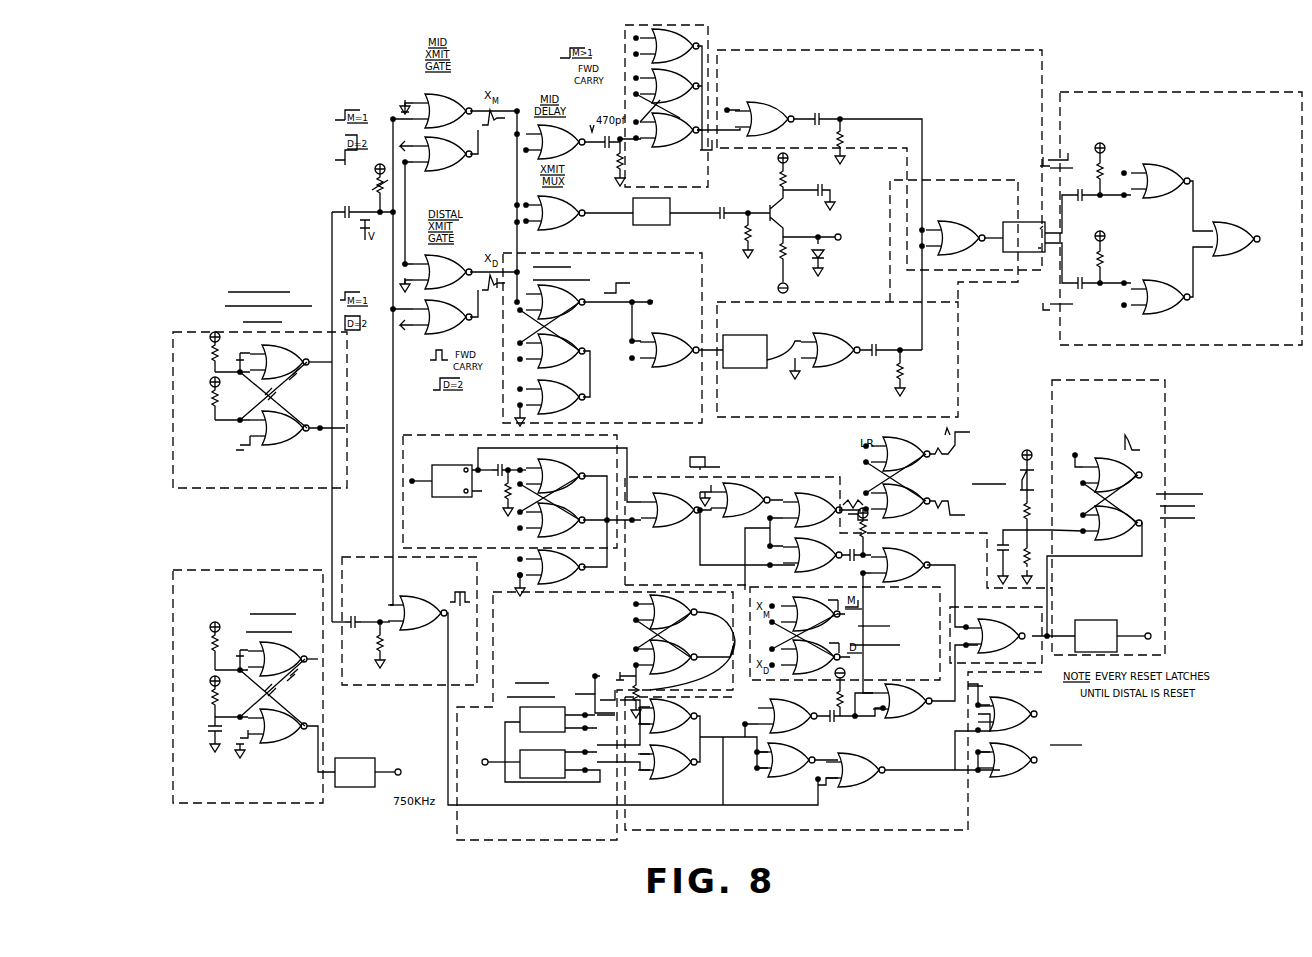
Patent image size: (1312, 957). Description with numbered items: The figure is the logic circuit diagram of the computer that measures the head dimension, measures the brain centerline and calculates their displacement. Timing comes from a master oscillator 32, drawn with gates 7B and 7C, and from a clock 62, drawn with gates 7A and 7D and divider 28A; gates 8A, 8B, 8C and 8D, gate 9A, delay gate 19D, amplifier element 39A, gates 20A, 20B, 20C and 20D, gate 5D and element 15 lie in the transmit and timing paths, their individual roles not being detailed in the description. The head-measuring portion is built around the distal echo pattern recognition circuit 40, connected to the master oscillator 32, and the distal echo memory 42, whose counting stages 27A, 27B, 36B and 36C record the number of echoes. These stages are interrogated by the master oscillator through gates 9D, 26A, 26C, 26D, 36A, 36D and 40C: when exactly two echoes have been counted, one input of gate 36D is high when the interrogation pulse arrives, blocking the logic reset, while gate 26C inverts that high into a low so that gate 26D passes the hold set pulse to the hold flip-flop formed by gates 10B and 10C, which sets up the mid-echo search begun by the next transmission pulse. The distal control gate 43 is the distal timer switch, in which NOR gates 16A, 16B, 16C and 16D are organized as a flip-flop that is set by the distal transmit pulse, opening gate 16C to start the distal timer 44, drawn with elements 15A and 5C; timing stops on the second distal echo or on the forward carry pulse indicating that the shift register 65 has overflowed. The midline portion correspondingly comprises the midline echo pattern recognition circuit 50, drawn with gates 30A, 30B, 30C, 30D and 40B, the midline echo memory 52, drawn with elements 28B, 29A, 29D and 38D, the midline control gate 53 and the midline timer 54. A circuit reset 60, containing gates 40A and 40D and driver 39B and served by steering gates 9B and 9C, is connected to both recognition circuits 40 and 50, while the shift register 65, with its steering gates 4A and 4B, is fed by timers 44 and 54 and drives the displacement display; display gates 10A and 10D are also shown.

The master oscillator 32 is at (213, 485).
The clock 62 is at (212, 796).
The distal echo pattern recognition circuit 40 is at (380, 588).
The distal echo memory 42 is at (496, 834).
The midline echo memory 52 is at (440, 549).
The midline echo pattern recognition circuit 50 is at (666, 578).
The midline control gate 53 is at (678, 184).
The midline timer 54 is at (1008, 83).
The distal control gate 43 is at (687, 420).
The distal timer 44 is at (940, 411).
The circuit reset 60 is at (1152, 411).
The shift register 65 is at (1283, 331).
The clock NOR gate 7A is at (277, 659).
The oscillator NOR gate 7B is at (279, 362).
The oscillator NOR gate 7C is at (279, 428).
The clock NOR gate 7D is at (277, 726).
The mid xmit gate 8A is at (442, 154).
The mid xmit gate 8B is at (442, 111).
The distal xmit gate 8C is at (442, 317).
The distal xmit gate 8D is at (442, 272).
The xmit mux gate 9A is at (555, 213).
The reset steering gate 9B is at (810, 657).
The reset steering gate 9C is at (810, 614).
The interrogation logic gate 9D is at (417, 613).
The display gate 10A is at (900, 501).
The hold R/S flip-flop gate 10B is at (1007, 760).
The hold R/S flip-flop gate 10C is at (1007, 714).
The display gate 10D is at (900, 454).
The flip-flop 15 is at (1024, 237).
The distal divide-by-two flip-flop 15A is at (745, 366).
The distal timer switch NOR gate 16A is at (555, 351).
The distal timer switch NOR gate 16B is at (555, 397).
The distal timer switch NOR gate 16C is at (669, 350).
The distal timer switch NOR gate 16D is at (555, 302).
The mid delay gate 19D is at (555, 142).
The forward carry gate 20A is at (669, 86).
The forward carry gate 20B is at (669, 46).
The 750 kHz gate 20C is at (764, 119).
The forward carry gate 20D is at (669, 130).
The interrogation logic gate 26A is at (667, 716).
The inverter gate 26C is at (785, 760).
The hold set gate 26D is at (761, 766).
The distal echo counting stage 27A is at (531, 719).
The distal echo counting stage 27B is at (535, 760).
The divide-by-two flip-flop 28A is at (368, 782).
The divide-by-two flip-flop 28B is at (441, 490).
The M 1 latch gate 29A is at (555, 520).
The M 1 latch gate 29D is at (555, 476).
The steering gate 30A is at (740, 500).
The steering gate 30B is at (812, 510).
The steering gate 30C is at (812, 555).
The steering gate 30D is at (670, 510).
The interrogation logic gate 36A is at (902, 701).
The distal echo counting stage 36B is at (667, 657).
The distal echo counting stage 36C is at (667, 612).
The logic reset blocking gate 36D is at (787, 716).
The gate 38D is at (555, 567).
The xmit amplifier 39A is at (651, 225).
The reset driver 39B is at (1113, 636).
The manual reset latch gate 40A is at (1112, 475).
The reset gate 40B is at (900, 565).
The interrogation logic gate 40C is at (896, 633).
The manual reset latch gate 40D is at (1112, 523).
The backward steering gate 4A is at (1160, 297).
The forward steering gate 4B is at (1160, 181).
The display gate 5C is at (830, 350).
The steering gate 5D is at (955, 238).